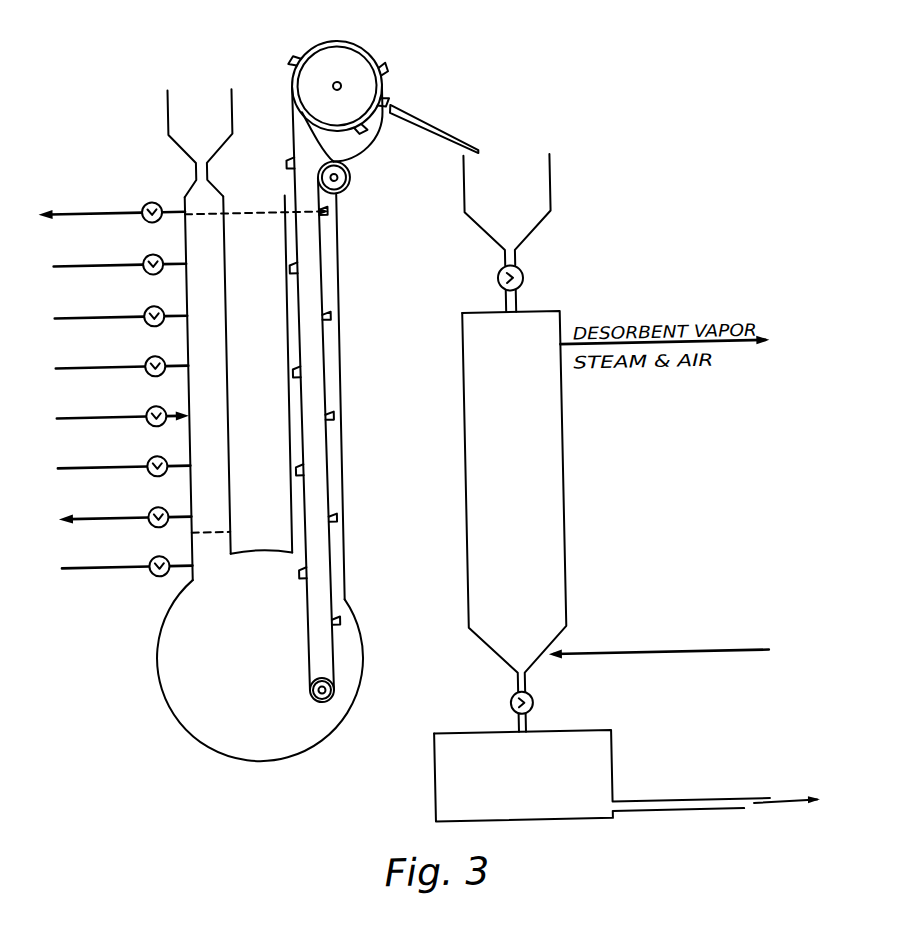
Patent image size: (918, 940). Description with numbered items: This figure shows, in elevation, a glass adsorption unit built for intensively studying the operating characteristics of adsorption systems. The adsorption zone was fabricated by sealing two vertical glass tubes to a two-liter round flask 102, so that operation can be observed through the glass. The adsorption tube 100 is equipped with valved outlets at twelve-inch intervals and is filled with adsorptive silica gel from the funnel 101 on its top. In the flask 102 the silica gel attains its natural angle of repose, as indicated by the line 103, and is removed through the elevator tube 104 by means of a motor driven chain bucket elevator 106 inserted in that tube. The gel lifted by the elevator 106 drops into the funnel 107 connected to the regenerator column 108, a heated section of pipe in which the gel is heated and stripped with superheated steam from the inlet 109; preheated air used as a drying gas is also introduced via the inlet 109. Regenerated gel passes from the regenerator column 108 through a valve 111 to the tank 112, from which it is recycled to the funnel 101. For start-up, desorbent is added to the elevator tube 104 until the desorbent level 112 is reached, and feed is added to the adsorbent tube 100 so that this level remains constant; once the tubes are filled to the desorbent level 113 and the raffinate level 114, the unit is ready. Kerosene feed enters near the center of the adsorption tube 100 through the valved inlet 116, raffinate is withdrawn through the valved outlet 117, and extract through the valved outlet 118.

The adsorption tube 100 is at (217, 350).
The funnel 101 is at (200, 143).
The flask 102 is at (185, 707).
The line 103 is at (289, 620).
The elevator tube 104 is at (319, 372).
The motor driven chain bucket elevator 106 is at (301, 120).
The funnel 107 is at (556, 203).
The regenerator column 108 is at (563, 502).
The inlet 109 is at (604, 657).
The valve 111 is at (526, 698).
The tank 112 is at (223, 526).
The desorbent level 113 is at (331, 208).
The raffinate level 114 is at (221, 205).
The valved inlet 116 is at (161, 421).
The valved outlet 117 is at (152, 217).
The valved outlet 118 is at (162, 522).